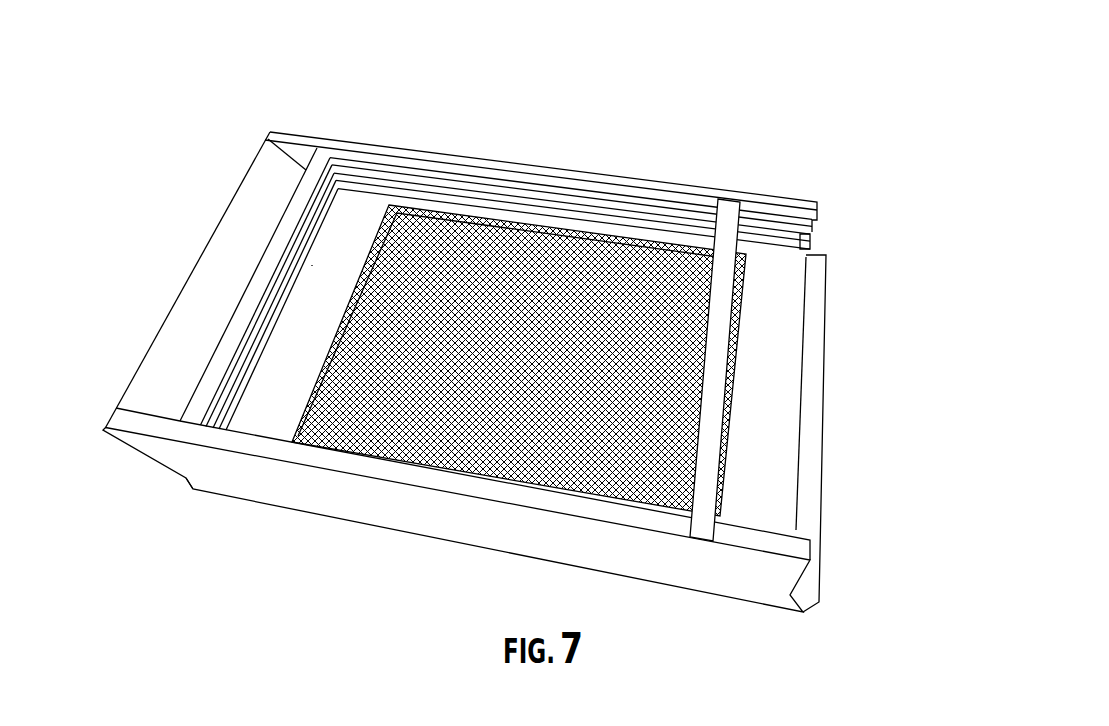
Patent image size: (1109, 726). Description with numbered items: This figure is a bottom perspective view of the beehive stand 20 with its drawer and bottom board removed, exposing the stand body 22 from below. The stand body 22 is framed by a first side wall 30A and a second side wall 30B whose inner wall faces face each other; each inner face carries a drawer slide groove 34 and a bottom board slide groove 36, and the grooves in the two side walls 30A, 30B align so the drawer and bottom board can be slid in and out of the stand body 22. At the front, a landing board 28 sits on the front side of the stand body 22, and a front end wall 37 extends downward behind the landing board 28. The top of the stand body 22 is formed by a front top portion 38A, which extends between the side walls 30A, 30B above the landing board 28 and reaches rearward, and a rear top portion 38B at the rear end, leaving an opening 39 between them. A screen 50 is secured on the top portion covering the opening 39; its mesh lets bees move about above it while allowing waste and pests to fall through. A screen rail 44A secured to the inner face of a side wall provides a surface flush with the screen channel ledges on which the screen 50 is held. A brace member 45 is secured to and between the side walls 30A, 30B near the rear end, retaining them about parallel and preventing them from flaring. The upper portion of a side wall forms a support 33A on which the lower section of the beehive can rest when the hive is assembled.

The beehive stand 20 is at (886, 151).
The stand body 22 is at (248, 514).
The landing board 28 is at (148, 345).
The first side wall 30A is at (430, 150).
The second side wall 30B is at (492, 558).
The support 33A is at (189, 481).
The drawer slide groove 34 is at (368, 166).
The bottom board slide groove 36 is at (343, 182).
The front end wall 37 is at (273, 248).
The front top portion 38A is at (312, 265).
The rear top portion 38B is at (748, 277).
The opening 39 is at (684, 380).
The screen rail 44A is at (455, 207).
The brace member 45 is at (730, 232).
The screen 50 is at (527, 257).